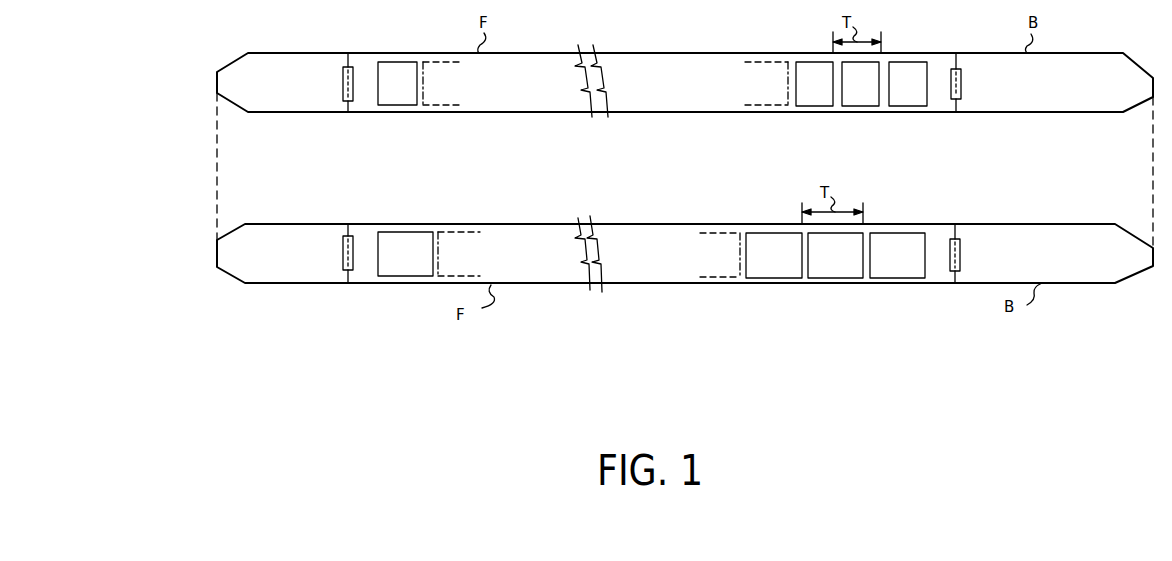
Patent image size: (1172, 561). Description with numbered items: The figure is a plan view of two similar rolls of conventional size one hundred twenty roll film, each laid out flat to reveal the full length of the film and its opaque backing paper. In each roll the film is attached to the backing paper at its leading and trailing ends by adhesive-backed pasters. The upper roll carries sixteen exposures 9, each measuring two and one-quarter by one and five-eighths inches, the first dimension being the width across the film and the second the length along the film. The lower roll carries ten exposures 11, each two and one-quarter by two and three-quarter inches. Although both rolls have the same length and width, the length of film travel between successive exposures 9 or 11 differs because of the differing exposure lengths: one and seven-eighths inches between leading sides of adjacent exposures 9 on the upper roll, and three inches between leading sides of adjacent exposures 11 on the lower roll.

The exposure 9 is at (652, 84).
The exposure 11 is at (651, 255).